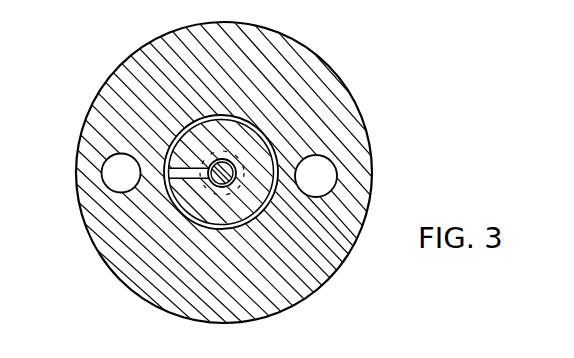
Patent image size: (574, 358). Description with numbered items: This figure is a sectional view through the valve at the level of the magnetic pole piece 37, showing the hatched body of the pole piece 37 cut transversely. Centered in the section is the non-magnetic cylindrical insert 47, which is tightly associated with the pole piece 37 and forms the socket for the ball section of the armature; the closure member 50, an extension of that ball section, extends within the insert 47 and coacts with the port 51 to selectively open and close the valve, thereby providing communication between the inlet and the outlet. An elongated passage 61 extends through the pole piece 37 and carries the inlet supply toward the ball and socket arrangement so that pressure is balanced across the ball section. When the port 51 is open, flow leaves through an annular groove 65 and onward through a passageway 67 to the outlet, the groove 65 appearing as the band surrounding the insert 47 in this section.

The magnetic pole piece 37 is at (302, 88).
The cylindrical insert 47 is at (241, 153).
The closure member 50 is at (234, 184).
The port 51 is at (187, 177).
The elongated passage 61 is at (107, 181).
The annular groove 65 is at (168, 140).
The passageway 67 is at (327, 177).